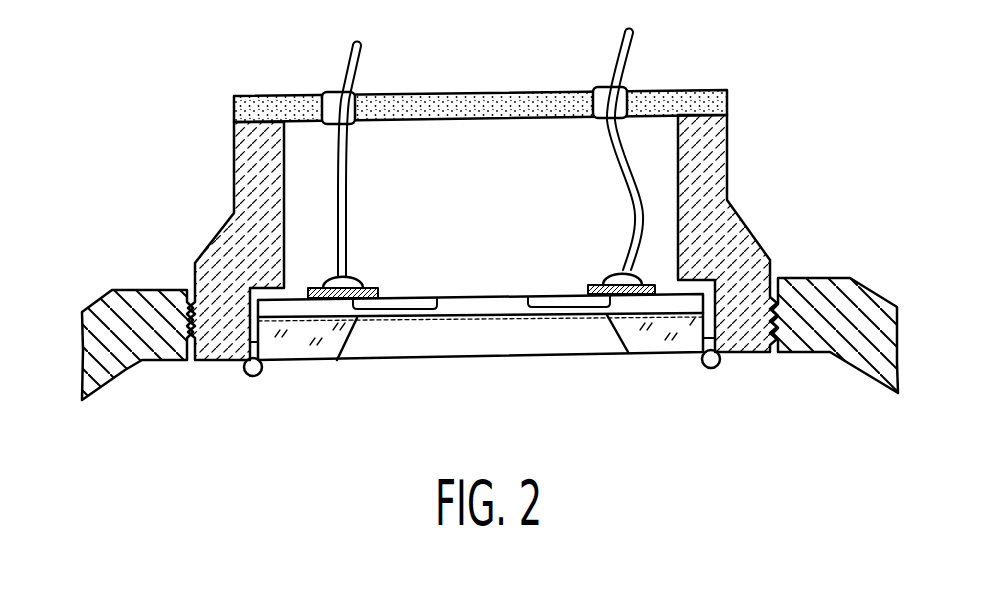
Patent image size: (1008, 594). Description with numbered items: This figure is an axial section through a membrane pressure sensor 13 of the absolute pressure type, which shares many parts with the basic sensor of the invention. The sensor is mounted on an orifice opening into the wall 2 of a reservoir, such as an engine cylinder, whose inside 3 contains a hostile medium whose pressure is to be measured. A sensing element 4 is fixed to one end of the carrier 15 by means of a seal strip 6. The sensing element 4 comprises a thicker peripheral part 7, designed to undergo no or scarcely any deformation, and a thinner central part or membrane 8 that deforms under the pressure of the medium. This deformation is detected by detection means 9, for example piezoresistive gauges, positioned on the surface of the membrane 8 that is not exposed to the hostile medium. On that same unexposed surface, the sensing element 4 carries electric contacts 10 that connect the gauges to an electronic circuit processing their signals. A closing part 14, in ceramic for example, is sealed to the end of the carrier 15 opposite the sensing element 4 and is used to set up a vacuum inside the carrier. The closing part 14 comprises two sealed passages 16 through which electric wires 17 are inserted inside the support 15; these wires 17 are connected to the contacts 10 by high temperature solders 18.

The wall of reservoir 2 is at (110, 362).
The inside of reservoir 3 is at (739, 447).
The sensing element 4 is at (480, 298).
The seal strip 6 is at (240, 382).
The peripheral part 7 is at (668, 344).
The membrane 8 is at (485, 308).
The detection means 9 is at (407, 307).
The electric contacts 10 is at (370, 288).
The pressure sensor 13 is at (223, 197).
The closing part 14 is at (727, 90).
The carrier 15 is at (722, 165).
The sealed passages 16 is at (325, 92).
The electric wires 17 is at (362, 60).
The high temperature solders 18 is at (350, 277).